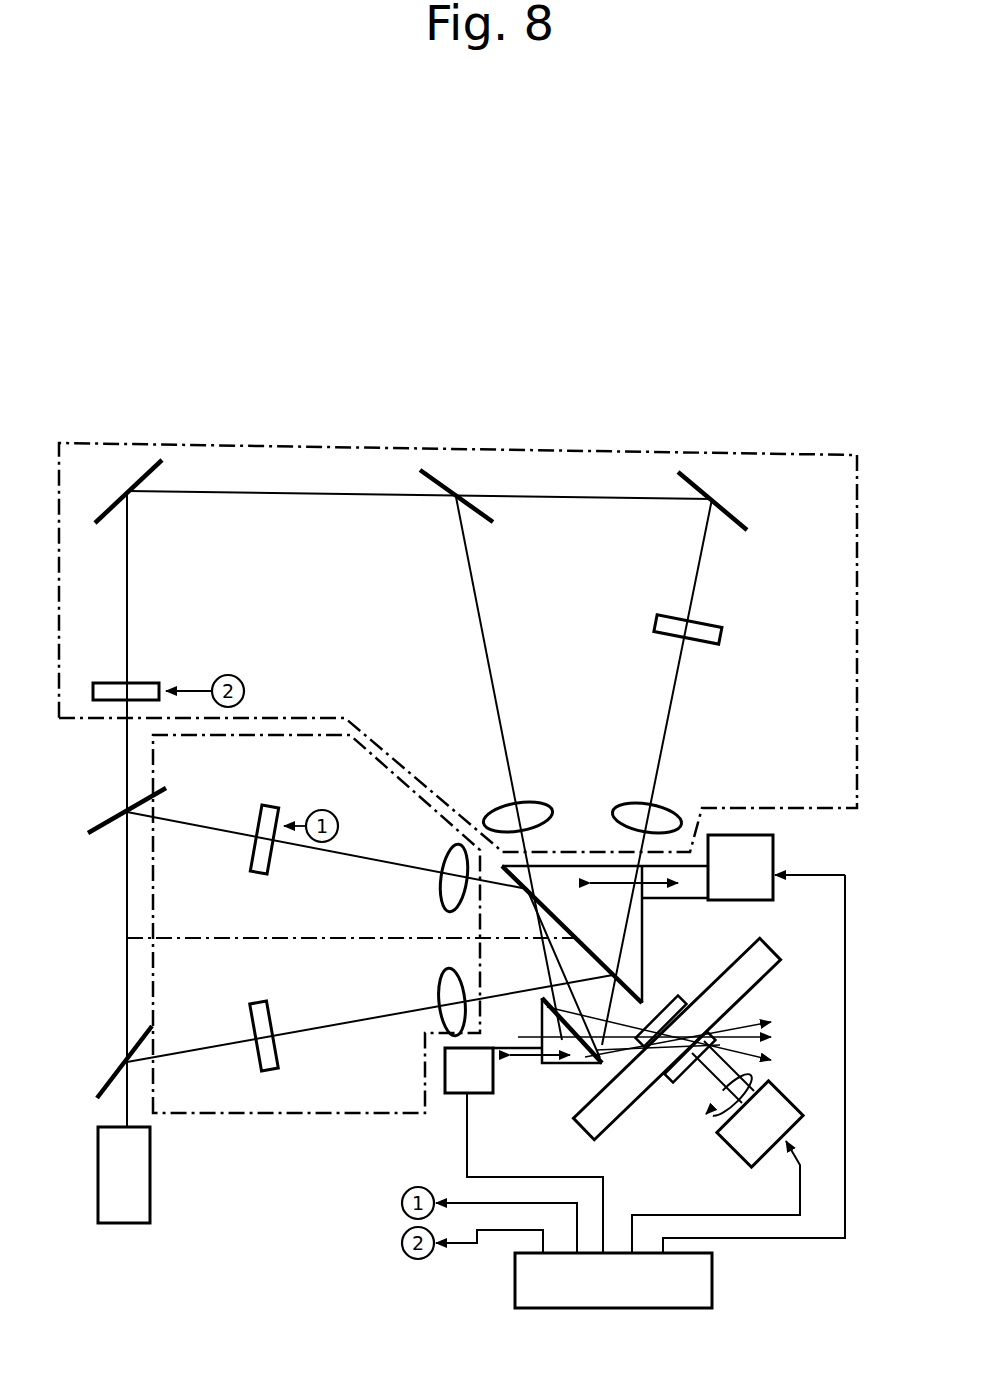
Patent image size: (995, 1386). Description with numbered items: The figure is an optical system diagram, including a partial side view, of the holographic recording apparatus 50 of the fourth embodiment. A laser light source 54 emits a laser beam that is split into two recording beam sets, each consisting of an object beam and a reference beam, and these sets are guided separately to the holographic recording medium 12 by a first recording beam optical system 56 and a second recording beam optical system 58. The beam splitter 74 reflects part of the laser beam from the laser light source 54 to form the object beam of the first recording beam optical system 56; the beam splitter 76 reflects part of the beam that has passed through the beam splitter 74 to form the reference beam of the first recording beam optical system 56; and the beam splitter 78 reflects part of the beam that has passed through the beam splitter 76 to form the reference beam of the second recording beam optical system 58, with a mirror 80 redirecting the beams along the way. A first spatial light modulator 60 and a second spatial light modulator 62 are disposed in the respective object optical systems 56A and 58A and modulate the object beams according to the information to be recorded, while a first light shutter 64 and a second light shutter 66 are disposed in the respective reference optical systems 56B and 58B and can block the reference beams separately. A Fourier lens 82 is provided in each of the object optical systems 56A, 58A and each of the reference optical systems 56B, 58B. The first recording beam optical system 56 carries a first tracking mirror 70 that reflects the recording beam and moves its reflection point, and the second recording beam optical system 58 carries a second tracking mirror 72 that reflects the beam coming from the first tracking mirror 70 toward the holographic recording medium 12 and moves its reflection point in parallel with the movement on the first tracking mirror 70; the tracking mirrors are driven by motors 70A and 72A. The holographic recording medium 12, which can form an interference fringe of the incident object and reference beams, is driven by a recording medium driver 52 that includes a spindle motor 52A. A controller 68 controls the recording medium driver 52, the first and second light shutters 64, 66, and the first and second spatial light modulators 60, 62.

The holographic recording medium 12 is at (766, 948).
The holographic recording apparatus 50 is at (421, 437).
The recording medium driver 52 is at (727, 1153).
The spindle motor 52A is at (770, 1086).
The laser light source 54 is at (118, 1225).
The first recording beam optical system 56 is at (266, 1115).
The object optical system 56A is at (358, 1020).
The reference optical system 56B is at (357, 853).
The second recording beam optical system 58 is at (255, 447).
The object optical system 58A is at (678, 676).
The reference optical system 58B is at (482, 652).
The first spatial light modulator 60 is at (250, 1062).
The second spatial light modulator 62 is at (655, 620).
The first light shutter 64 is at (250, 856).
The second light shutter 66 is at (148, 683).
The controller 68 is at (713, 1282).
The first tracking mirror 70 is at (558, 882).
The motor 70A is at (774, 858).
The second tracking mirror 72 is at (580, 1052).
The motor 72A is at (488, 1095).
The beam splitter 74 is at (107, 1088).
The beam splitter 76 is at (110, 822).
The beam splitter 78 is at (433, 474).
The mirror 80 is at (110, 503).
The Fourier lens 82 is at (535, 802).